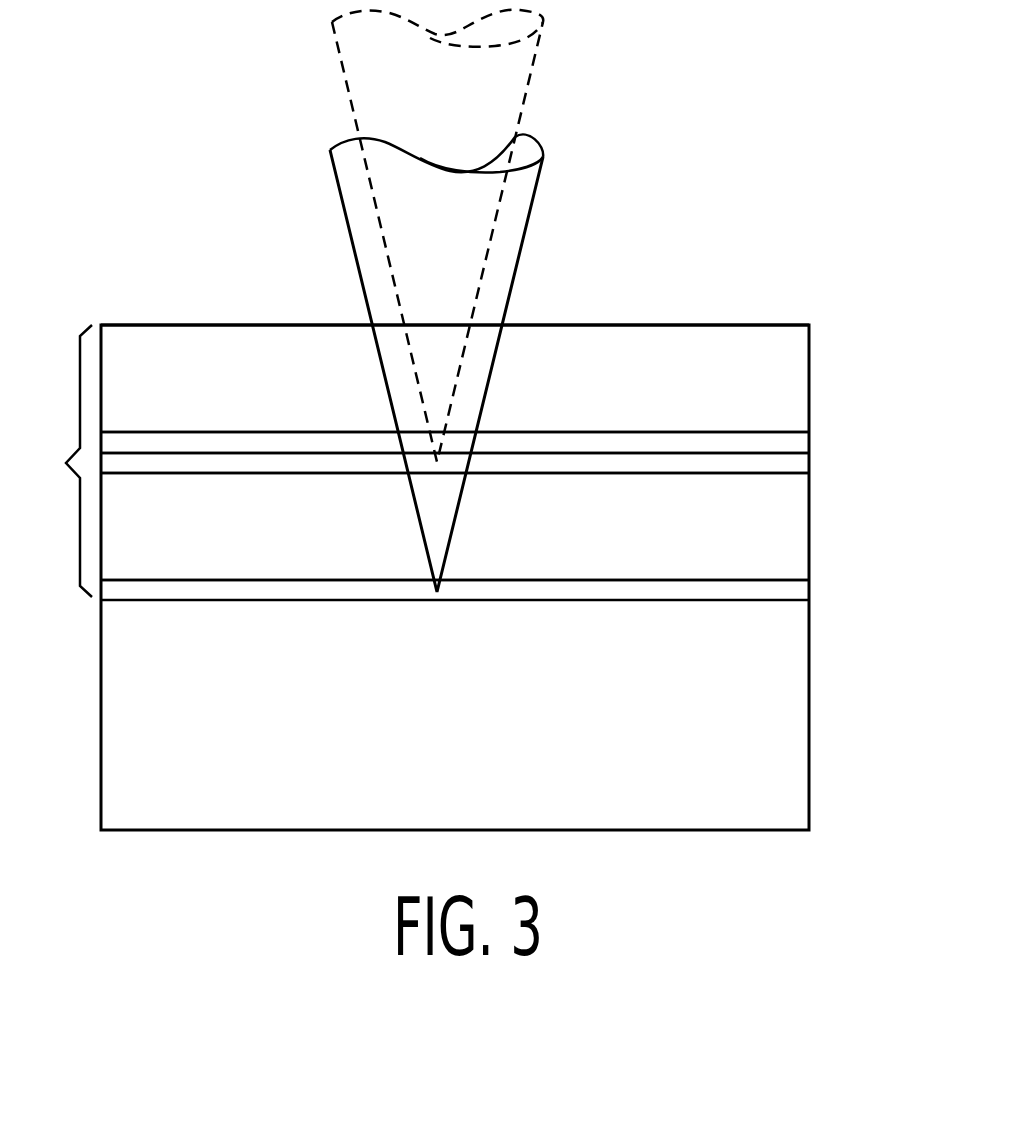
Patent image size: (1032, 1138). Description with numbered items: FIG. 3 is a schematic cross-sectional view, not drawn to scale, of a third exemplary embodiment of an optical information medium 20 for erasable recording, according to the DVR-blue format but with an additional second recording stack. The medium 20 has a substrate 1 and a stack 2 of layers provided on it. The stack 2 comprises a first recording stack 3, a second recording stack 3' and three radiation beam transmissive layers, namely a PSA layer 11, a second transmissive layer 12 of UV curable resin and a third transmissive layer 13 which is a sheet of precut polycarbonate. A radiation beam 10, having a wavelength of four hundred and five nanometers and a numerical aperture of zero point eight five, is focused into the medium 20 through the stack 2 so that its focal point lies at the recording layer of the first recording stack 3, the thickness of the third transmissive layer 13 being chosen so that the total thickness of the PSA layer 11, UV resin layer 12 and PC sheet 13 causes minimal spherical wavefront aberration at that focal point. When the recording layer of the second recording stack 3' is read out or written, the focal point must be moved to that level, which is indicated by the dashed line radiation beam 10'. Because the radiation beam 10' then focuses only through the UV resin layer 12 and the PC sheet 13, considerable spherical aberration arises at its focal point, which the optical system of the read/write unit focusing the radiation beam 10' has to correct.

The substrate 1 is at (788, 730).
The stack of layers 2 is at (58, 483).
The first recording stack 3 is at (494, 599).
The second recording stack 3' is at (499, 472).
The radiation beam 10 is at (477, 363).
The dashed line radiation beam 10' is at (481, 236).
The PSA layer 11 is at (788, 531).
The second transmissive layer 12 is at (788, 441).
The third radiation beam transmissive layer 13 is at (788, 371).
The optical information medium 20 is at (756, 142).